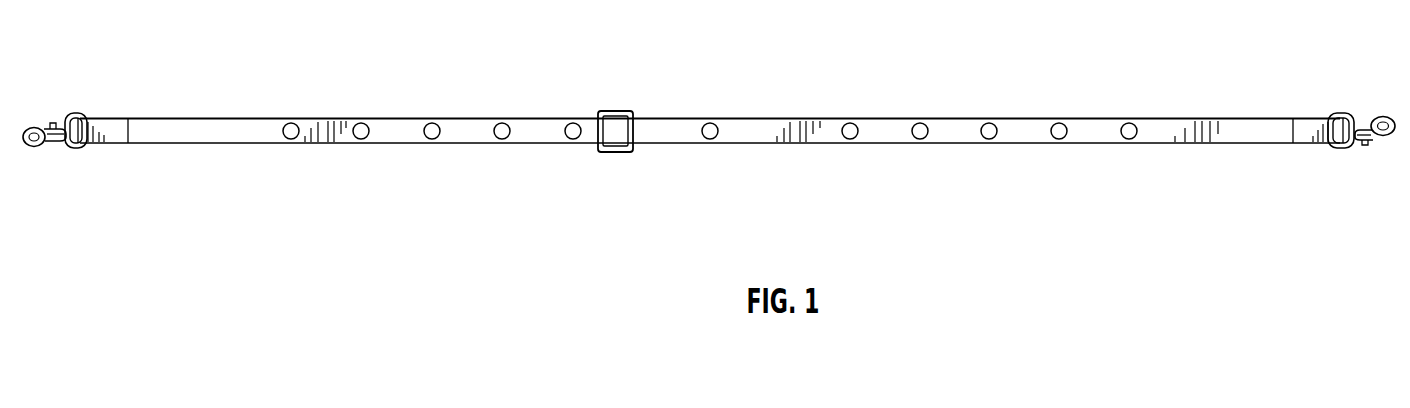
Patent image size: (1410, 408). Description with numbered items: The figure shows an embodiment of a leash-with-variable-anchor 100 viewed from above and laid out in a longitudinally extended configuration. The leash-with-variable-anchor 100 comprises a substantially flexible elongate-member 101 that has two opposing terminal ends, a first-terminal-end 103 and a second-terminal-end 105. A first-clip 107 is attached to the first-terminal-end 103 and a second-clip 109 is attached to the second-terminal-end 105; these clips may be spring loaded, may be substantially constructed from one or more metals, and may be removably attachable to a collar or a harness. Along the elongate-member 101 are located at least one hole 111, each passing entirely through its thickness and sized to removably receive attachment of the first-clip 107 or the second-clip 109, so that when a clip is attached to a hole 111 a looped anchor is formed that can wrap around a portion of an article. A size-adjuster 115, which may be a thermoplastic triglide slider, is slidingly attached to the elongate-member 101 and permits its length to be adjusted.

The leash-with-variable-anchor 100 is at (1133, 41).
The elongate-member 101 is at (876, 117).
The first-terminal-end 103 is at (93, 137).
The second-terminal-end 105 is at (1325, 120).
The first-clip 107 is at (32, 144).
The second-clip 109 is at (1384, 141).
The hole 111 is at (291, 139).
The size-adjuster 115 is at (614, 110).